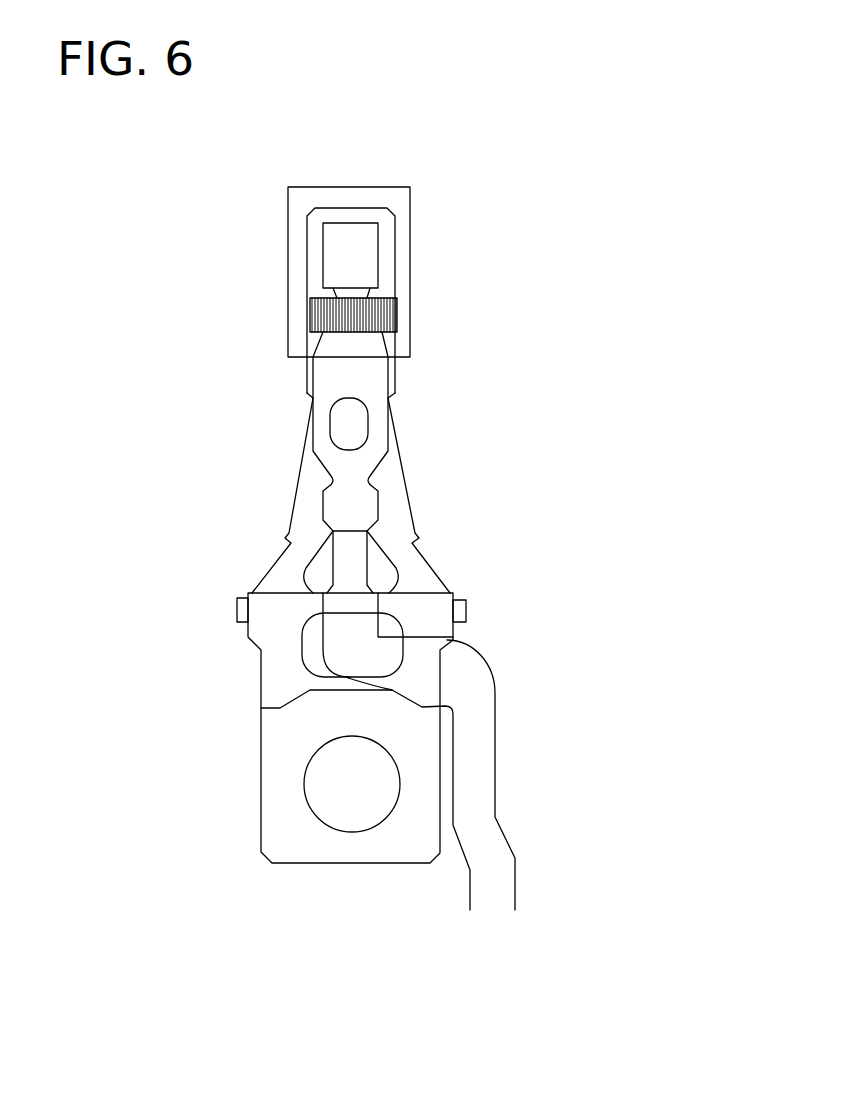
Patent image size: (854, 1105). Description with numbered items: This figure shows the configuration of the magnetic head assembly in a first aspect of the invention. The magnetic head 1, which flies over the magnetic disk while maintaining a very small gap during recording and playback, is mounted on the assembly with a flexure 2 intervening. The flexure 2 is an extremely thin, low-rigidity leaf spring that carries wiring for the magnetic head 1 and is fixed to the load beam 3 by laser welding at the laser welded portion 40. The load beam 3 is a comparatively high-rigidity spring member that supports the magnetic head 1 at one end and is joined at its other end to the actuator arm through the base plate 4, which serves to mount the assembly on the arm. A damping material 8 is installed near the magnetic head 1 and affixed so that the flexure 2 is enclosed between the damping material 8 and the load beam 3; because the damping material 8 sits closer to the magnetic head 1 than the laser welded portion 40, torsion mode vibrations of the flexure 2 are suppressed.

The magnetic head 1 is at (377, 230).
The flexure 2 is at (462, 428).
The load beam 3 is at (397, 518).
The base plate 4 is at (277, 730).
The damping material 8 is at (368, 305).
The laser welded portion 40 is at (355, 430).